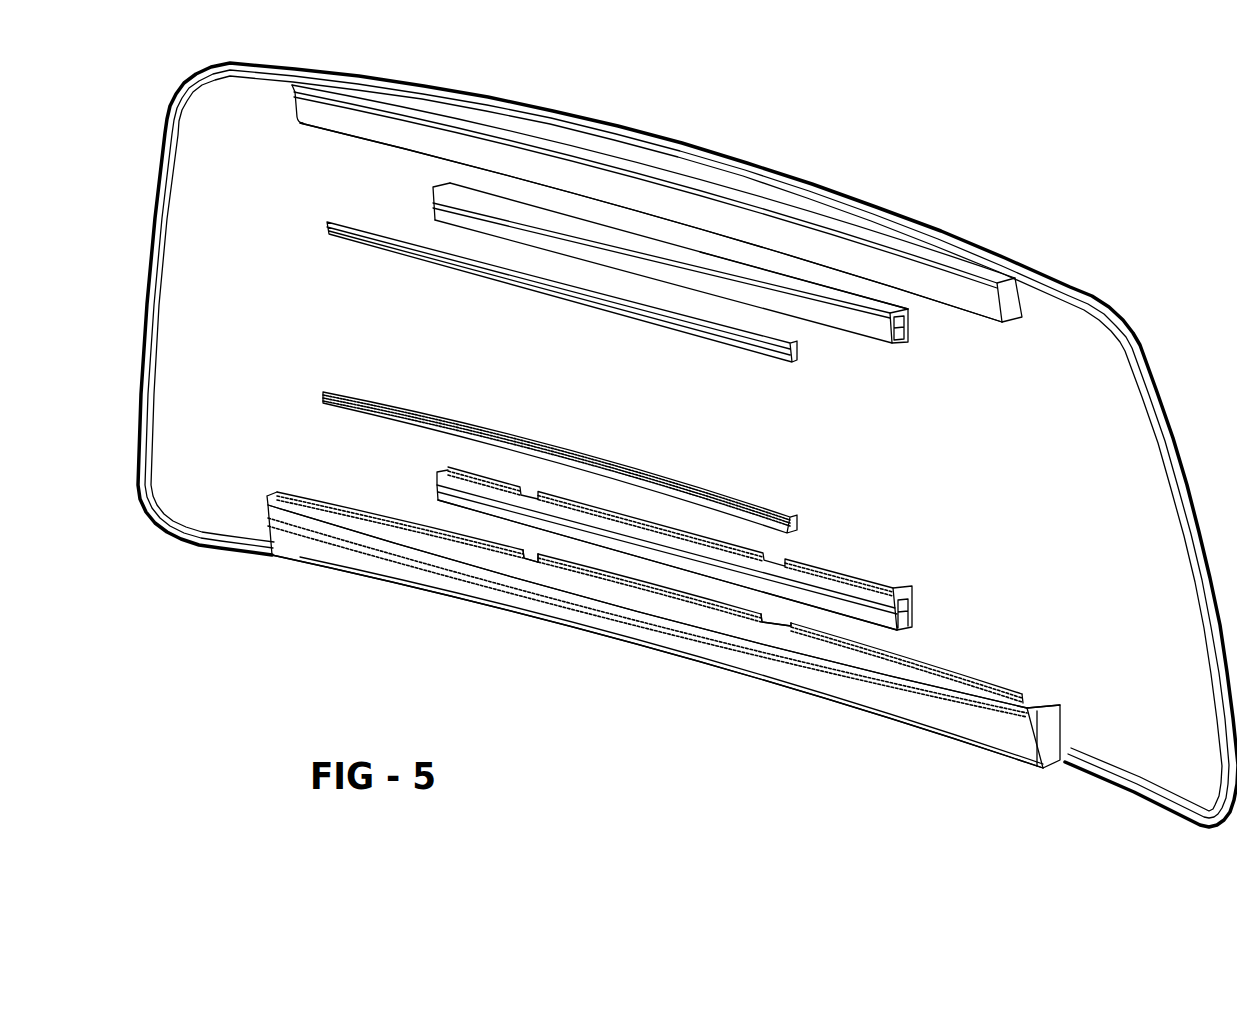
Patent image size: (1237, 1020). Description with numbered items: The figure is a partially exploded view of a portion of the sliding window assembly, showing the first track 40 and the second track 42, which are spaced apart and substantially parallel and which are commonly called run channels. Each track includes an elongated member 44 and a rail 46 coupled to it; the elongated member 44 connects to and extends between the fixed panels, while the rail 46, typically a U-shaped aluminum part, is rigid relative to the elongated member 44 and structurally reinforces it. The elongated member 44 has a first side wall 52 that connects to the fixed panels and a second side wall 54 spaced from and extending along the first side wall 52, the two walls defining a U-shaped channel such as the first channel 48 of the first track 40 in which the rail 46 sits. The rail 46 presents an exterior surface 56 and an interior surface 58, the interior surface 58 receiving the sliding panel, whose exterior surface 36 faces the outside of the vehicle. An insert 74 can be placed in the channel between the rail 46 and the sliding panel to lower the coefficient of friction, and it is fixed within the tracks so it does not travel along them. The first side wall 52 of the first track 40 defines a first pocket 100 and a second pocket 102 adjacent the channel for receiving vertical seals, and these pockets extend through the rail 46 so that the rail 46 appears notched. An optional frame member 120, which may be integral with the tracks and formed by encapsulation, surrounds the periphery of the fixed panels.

The frame member 120 is at (152, 357).
The second track 42 is at (968, 288).
The elongated member 44 is at (1013, 312).
The second side wall 54 is at (340, 122).
The rail 46 is at (908, 333).
The exterior surface 56 is at (880, 305).
The interior surface 58 is at (902, 347).
The exterior surface 36 is at (880, 622).
The insert 74 is at (358, 236).
The first track 40 is at (977, 750).
The first side wall 52 is at (1018, 693).
The first channel 48 is at (1030, 706).
The first pocket 100 is at (531, 550).
The second pocket 102 is at (775, 614).